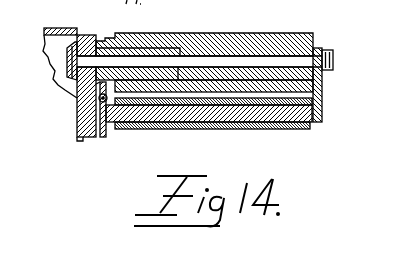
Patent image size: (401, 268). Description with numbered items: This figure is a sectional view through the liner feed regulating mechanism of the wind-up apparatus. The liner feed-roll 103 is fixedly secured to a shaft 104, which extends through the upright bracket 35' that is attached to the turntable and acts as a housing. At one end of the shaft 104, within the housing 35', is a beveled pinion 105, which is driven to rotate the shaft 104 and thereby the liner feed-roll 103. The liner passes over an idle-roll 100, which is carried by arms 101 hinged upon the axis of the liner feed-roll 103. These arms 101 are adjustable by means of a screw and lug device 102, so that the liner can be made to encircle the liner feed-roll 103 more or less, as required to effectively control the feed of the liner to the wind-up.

The upright bracket 35' is at (69, 92).
The idle-roll 100 is at (182, 129).
The arms 101 is at (316, 90).
The screw and lug device 102 is at (103, 103).
The liner feed-roll 103 is at (277, 33).
The shaft 104 is at (300, 60).
The beveled pinion 105 is at (73, 78).